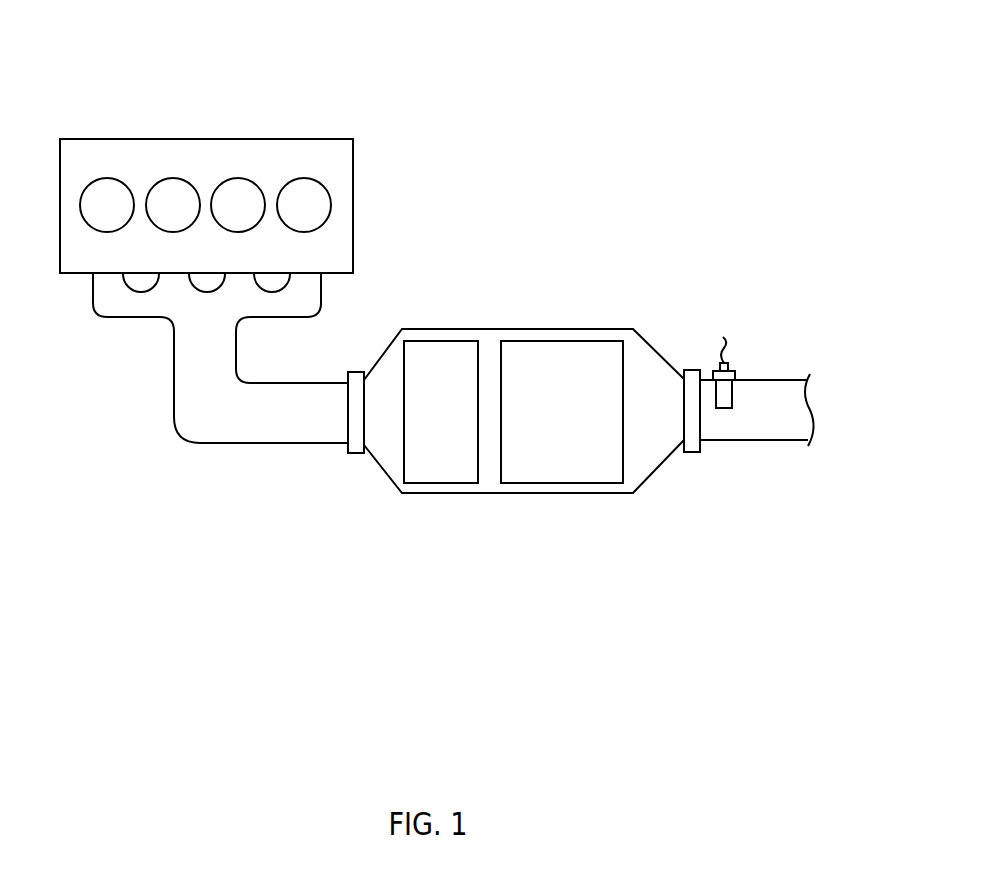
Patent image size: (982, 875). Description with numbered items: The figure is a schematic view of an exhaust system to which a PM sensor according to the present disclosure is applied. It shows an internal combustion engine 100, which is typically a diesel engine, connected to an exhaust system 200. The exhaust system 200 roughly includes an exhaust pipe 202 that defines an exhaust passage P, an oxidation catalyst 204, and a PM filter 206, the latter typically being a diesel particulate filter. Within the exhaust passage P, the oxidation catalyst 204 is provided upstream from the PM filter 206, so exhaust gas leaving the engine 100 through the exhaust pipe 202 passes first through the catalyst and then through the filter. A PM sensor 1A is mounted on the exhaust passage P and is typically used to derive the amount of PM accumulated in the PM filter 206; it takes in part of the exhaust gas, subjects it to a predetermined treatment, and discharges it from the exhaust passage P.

The internal combustion engine 100 is at (287, 139).
The exhaust pipe 202 is at (242, 443).
The exhaust system 200 is at (359, 529).
The oxidation catalyst 204 is at (439, 340).
The PM filter 206 is at (558, 340).
The PM sensor 1A is at (738, 336).
The exhaust passage P is at (311, 419).